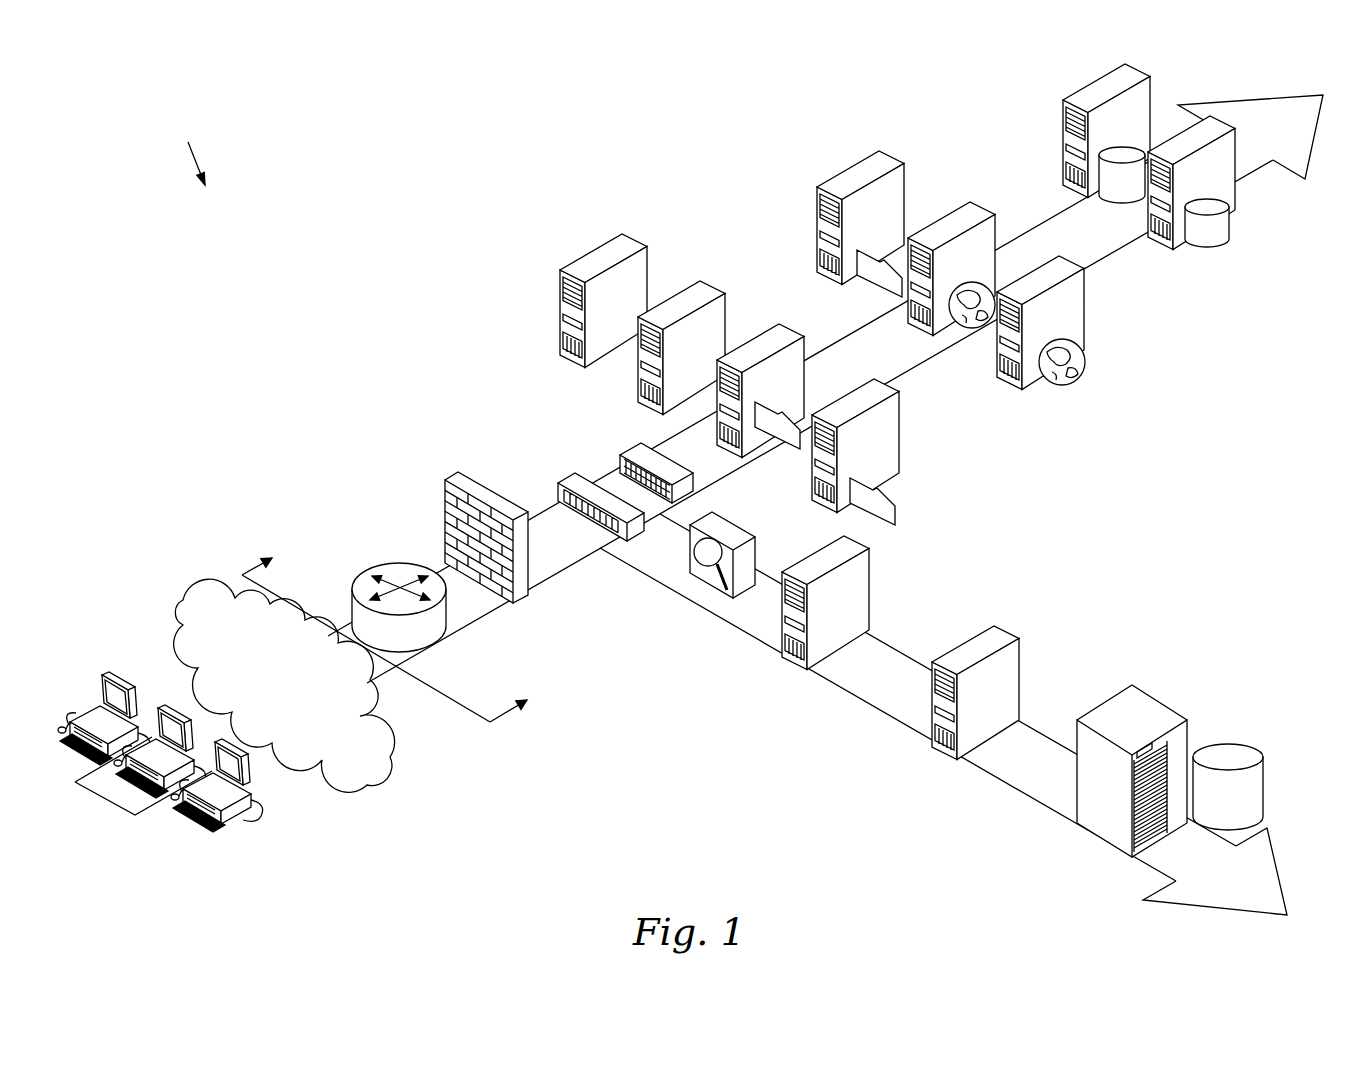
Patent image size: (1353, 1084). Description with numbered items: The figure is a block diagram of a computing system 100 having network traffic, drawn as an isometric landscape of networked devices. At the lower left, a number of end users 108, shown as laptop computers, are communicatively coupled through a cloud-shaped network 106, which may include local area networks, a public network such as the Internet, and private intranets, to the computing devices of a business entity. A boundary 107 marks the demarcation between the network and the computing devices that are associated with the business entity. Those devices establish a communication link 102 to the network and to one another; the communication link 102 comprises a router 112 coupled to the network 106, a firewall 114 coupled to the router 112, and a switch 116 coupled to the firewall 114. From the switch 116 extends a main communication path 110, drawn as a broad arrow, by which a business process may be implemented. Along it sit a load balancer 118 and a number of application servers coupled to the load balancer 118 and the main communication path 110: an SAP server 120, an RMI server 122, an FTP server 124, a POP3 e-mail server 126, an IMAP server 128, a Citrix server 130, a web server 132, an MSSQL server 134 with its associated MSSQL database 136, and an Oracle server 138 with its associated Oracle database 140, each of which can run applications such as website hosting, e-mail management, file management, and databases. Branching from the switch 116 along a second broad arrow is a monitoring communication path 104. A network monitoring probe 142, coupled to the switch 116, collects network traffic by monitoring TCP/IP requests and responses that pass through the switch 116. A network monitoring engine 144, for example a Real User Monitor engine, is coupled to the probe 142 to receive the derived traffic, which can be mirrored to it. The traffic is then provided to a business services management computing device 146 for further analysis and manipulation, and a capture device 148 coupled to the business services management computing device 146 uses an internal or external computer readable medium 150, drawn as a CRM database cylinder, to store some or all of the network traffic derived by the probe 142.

The network monitoring system 100 is at (187, 150).
The communication link 102 is at (473, 622).
The monitoring communication path 104 is at (907, 730).
The network 106 is at (188, 609).
The boundary 107 is at (460, 706).
The end users 108 is at (238, 743).
The main communication path 110 is at (1280, 101).
The router 112 is at (400, 566).
The firewall 114 is at (440, 520).
The switch 116 is at (580, 480).
The load balancer 118 is at (693, 500).
The SAP server 120 is at (636, 245).
The RMI server 122 is at (714, 290).
The FTP server 124 is at (782, 333).
The POP3 e-mail server 126 is at (900, 436).
The IMAP server 128 is at (892, 157).
The Citrix server 130 is at (980, 209).
The web server 132 is at (1085, 301).
The MSSQL server 134 is at (1092, 82).
The MSSQL database 136 is at (1143, 146).
The Oracle server 138 is at (1240, 194).
The Oracle database 140 is at (1235, 230).
The network monitoring probe 142 is at (731, 520).
The network monitoring engine 144 is at (872, 578).
The business services management computing device 146 is at (1005, 630).
The capture device 148 is at (1160, 702).
The computer readable medium 150 is at (1250, 740).